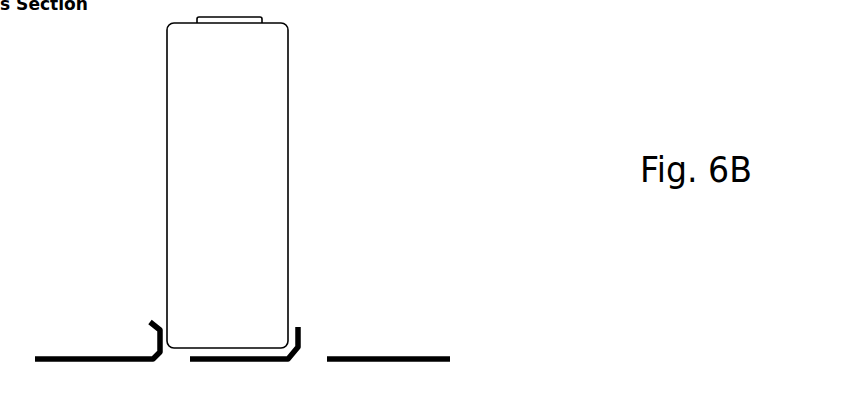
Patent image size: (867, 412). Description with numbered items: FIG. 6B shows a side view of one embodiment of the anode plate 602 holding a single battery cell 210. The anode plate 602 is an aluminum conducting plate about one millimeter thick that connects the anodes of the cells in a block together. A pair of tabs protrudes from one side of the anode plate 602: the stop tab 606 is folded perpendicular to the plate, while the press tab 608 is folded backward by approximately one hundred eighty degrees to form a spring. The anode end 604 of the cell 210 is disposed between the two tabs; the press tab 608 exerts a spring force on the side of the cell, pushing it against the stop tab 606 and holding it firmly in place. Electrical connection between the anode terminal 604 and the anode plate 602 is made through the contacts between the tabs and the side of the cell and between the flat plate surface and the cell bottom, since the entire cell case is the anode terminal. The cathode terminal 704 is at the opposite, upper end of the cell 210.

The cell 210 is at (240, 123).
The anode plate 602 is at (433, 353).
The anode end 604 is at (290, 180).
The stop tab 606 is at (300, 333).
The press tab 608 is at (152, 341).
The cathode terminal 704 is at (250, 17).